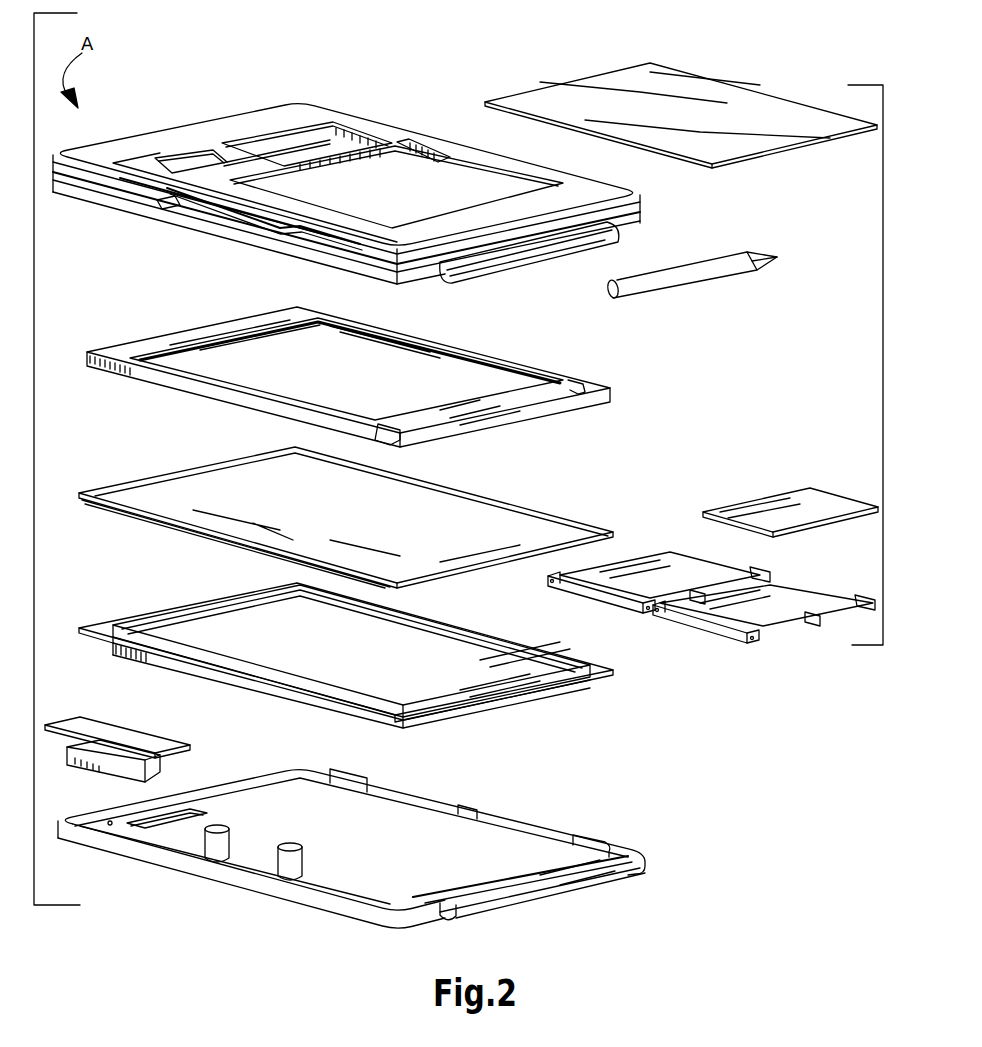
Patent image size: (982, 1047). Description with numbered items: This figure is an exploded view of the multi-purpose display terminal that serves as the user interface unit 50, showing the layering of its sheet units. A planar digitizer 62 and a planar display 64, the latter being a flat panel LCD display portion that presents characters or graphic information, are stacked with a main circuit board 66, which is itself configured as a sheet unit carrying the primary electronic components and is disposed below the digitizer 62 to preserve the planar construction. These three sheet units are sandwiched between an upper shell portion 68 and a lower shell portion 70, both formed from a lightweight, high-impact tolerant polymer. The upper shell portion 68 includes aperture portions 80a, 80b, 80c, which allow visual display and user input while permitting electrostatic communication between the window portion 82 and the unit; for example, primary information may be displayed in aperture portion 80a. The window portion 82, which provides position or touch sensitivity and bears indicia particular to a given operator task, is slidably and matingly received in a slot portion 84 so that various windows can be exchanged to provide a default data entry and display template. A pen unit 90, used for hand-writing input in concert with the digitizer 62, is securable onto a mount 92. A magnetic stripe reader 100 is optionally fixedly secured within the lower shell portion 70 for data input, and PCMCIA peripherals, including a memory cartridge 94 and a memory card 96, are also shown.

The user interface unit 50 is at (90, 441).
The digitizer 62 is at (495, 522).
The display 64 is at (502, 382).
The main circuit board 66 is at (508, 663).
The upper shell portion 68 is at (600, 187).
The lower shell portion 70 is at (583, 883).
The aperture portion 80a is at (402, 147).
The aperture portion 80b is at (322, 142).
The aperture portion 80c is at (207, 165).
The window portion 82 is at (708, 105).
The slot portion 84 is at (225, 217).
The pen unit 90 is at (653, 292).
The mount 92 is at (597, 247).
The memory cartridge 94 is at (722, 627).
The memory card 96 is at (790, 507).
The magnetic stripe reader 100 is at (132, 742).